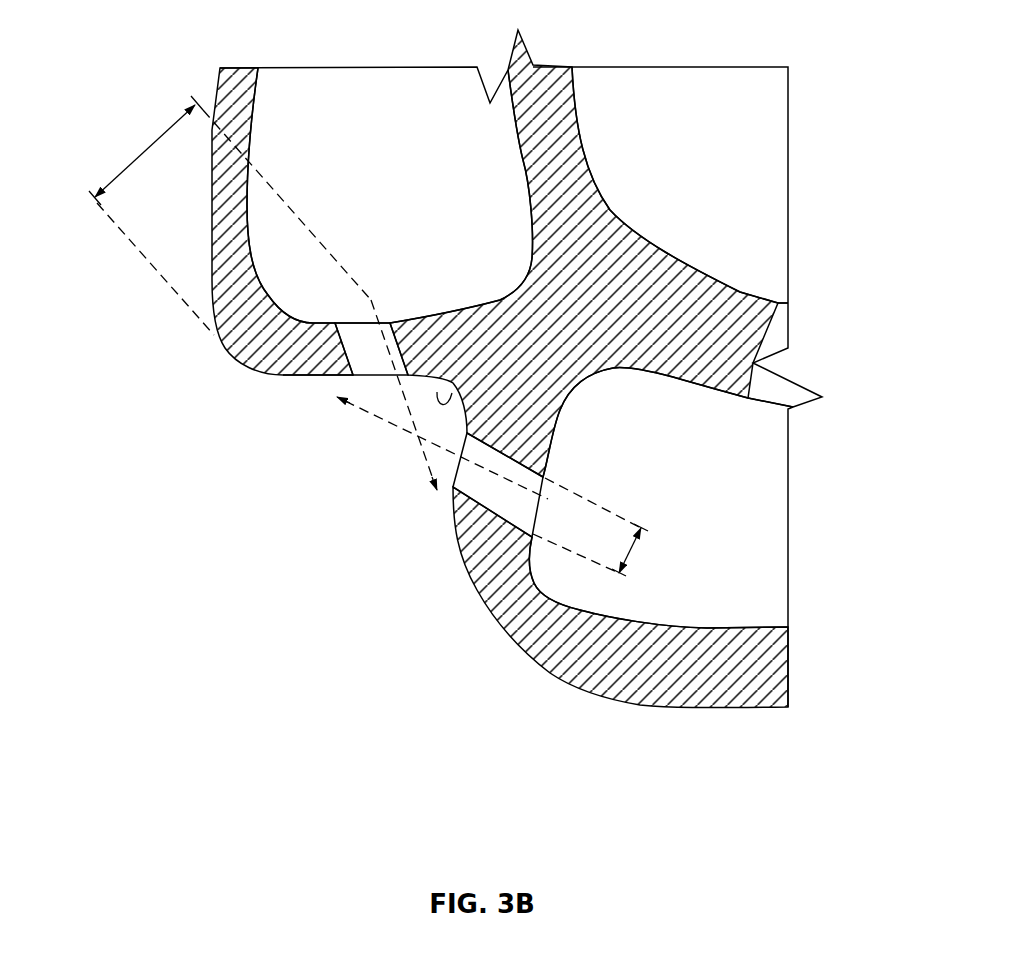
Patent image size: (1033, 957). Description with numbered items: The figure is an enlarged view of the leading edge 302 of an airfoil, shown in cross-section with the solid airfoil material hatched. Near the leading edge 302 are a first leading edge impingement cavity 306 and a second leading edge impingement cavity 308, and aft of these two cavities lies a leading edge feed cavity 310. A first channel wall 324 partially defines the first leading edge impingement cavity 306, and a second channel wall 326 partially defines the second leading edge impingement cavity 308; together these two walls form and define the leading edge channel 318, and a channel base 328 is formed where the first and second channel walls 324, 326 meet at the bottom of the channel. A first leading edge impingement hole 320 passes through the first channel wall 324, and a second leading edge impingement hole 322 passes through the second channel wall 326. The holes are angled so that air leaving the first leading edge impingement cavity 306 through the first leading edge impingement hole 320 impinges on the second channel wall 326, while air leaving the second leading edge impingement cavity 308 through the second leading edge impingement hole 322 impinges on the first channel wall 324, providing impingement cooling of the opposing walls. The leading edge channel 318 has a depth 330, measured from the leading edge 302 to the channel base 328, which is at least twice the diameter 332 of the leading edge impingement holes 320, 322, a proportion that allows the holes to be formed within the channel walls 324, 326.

The leading edge 302 is at (228, 350).
The first leading edge impingement cavity 306 is at (693, 512).
The second leading edge impingement cavity 308 is at (340, 198).
The leading edge feed cavity 310 is at (683, 164).
The leading edge channel 318 is at (331, 468).
The first leading edge impingement hole 320 is at (550, 494).
The second leading edge impingement hole 322 is at (361, 303).
The first channel wall 324 is at (450, 512).
The second channel wall 326 is at (283, 378).
The channel base 328 is at (437, 392).
The depth 330 is at (148, 145).
The diameter 332 is at (632, 551).